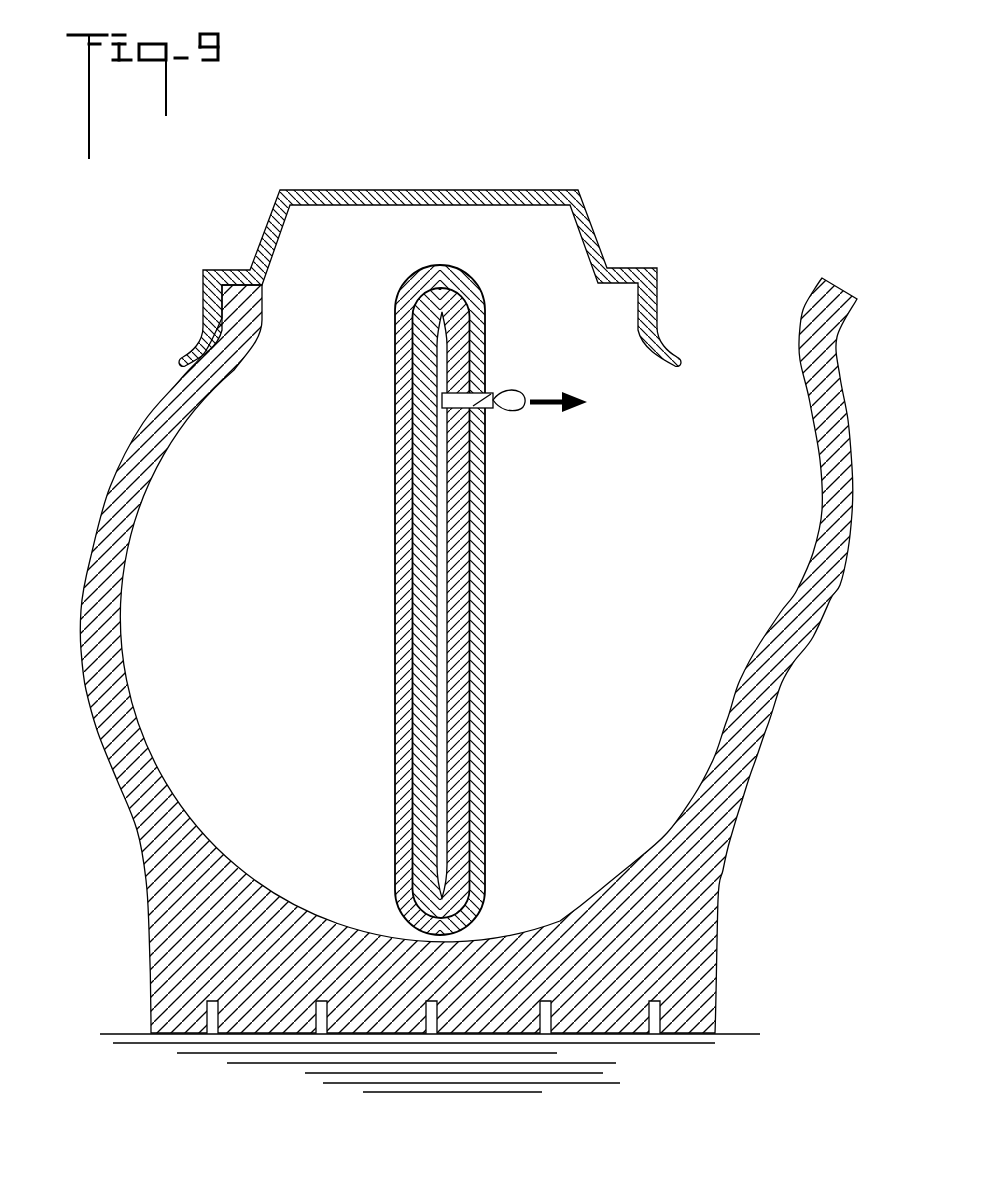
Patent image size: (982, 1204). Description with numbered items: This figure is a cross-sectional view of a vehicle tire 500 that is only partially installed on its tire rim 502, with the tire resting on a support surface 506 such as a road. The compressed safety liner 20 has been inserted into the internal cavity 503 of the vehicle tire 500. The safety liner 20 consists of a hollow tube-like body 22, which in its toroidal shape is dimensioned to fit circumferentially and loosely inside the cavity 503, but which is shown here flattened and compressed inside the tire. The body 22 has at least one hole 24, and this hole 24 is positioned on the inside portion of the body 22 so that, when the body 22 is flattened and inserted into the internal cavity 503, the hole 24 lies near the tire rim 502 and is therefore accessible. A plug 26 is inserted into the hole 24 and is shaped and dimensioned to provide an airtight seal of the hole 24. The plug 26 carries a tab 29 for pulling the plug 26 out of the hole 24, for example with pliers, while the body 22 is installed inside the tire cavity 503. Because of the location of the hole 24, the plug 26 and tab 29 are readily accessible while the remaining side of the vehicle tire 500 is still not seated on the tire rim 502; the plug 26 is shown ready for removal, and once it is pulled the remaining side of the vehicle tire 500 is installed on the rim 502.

The safety liner 20 is at (461, 600).
The hollow tube-like body 22 is at (397, 525).
The hole 24 is at (452, 408).
The plug 26 is at (492, 393).
The tab 29 is at (508, 410).
The vehicle tire 500 is at (120, 793).
The tire rim 502 is at (490, 188).
The internal cavity 503 is at (255, 578).
The support surface 506 is at (630, 1062).